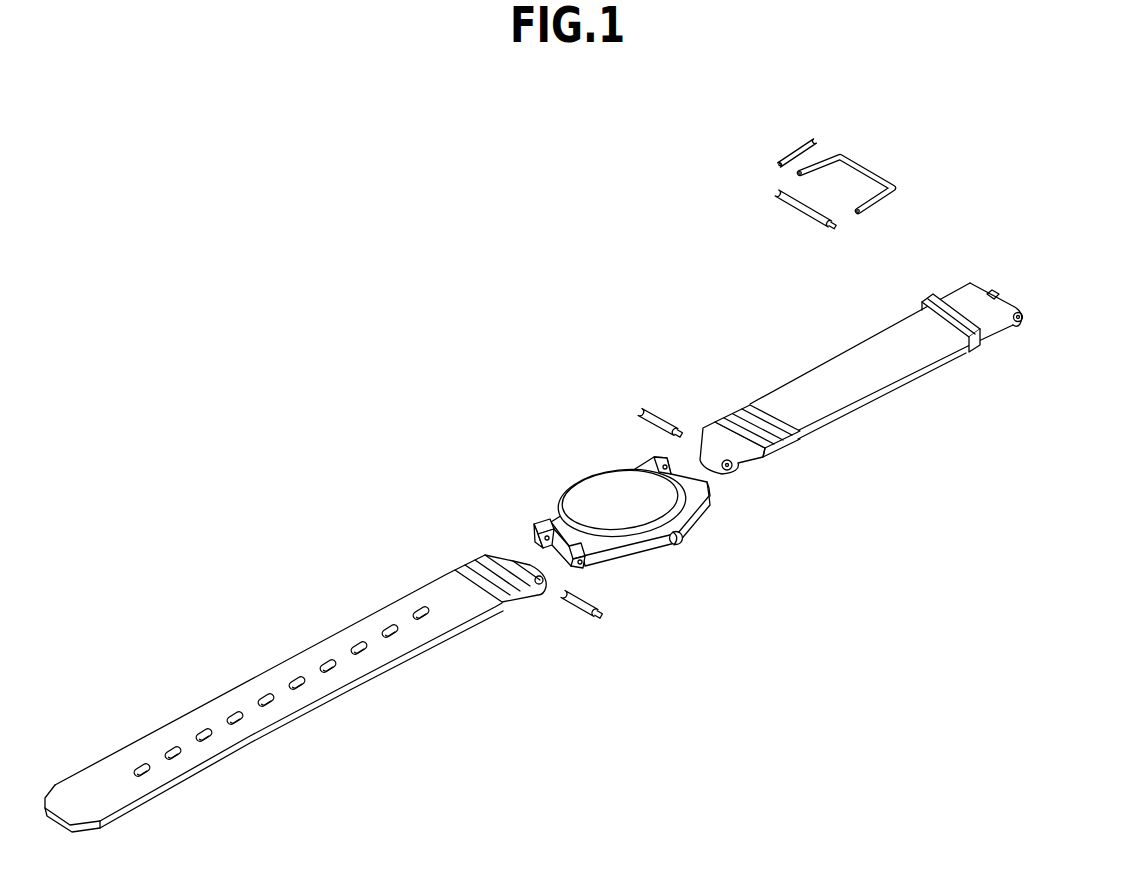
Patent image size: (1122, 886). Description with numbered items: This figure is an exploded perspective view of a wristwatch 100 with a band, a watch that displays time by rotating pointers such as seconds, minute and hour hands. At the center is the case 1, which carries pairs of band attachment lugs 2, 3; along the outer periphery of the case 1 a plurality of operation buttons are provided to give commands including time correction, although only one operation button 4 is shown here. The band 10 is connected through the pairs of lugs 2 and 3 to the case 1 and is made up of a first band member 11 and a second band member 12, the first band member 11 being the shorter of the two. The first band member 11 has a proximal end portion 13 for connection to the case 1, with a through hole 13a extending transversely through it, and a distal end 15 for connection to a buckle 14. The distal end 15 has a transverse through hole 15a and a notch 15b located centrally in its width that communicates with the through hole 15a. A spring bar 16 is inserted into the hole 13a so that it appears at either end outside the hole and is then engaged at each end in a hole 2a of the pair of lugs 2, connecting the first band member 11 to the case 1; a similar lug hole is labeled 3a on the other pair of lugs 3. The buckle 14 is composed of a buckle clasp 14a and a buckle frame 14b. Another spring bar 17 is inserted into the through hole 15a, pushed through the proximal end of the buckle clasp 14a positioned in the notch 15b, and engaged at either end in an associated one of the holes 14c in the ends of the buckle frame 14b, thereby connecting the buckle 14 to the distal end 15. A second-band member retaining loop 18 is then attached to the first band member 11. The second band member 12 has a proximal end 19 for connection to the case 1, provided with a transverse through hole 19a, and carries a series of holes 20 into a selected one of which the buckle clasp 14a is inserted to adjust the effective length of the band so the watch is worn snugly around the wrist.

The wristwatch 100 is at (549, 366).
The case 1 is at (568, 492).
The band attachment lugs 2 is at (648, 464).
The hole 2a is at (708, 488).
The band attachment lugs 3 is at (542, 519).
The lug 3a is at (534, 528).
The operation button 4 is at (682, 542).
The band 10 is at (572, 529).
The first band member 11 is at (840, 392).
The second band member 12 is at (330, 684).
The proximal end portion 13 is at (708, 445).
The through hole 13a is at (733, 469).
The buckle 14 is at (984, 171).
The buckle clasp 14a is at (790, 150).
The buckle frame 14b is at (866, 168).
The holes 14c is at (802, 170).
The distal end 15 is at (1008, 303).
The through hole 15a is at (1024, 320).
The notch 15b is at (990, 292).
The spring bar 16 is at (656, 409).
The spring bar 17 is at (797, 208).
The second-band member retaining loop 18 is at (950, 316).
The proximal end 19 is at (523, 558).
The through hole 19a is at (552, 588).
The holes 20 is at (140, 768).